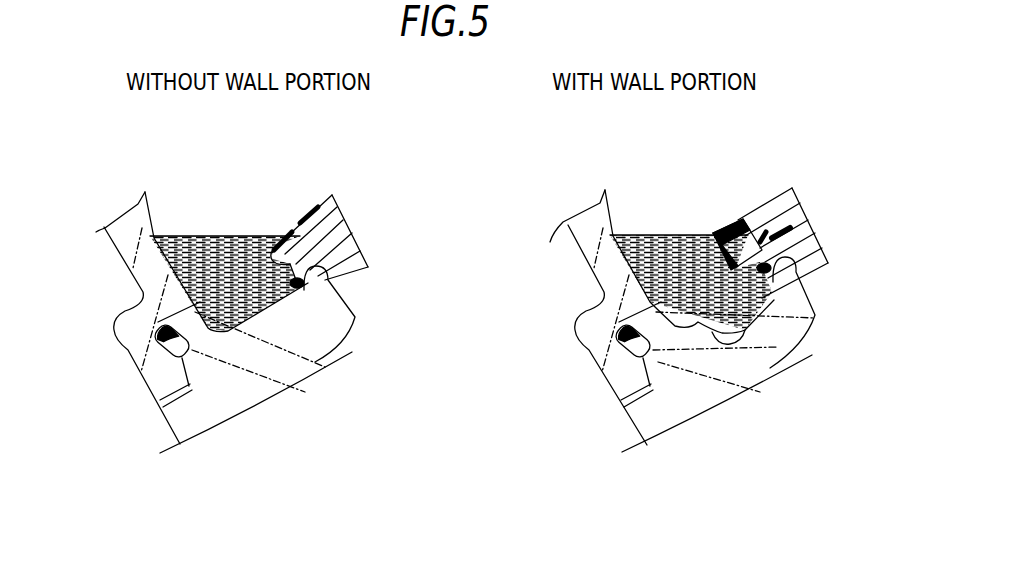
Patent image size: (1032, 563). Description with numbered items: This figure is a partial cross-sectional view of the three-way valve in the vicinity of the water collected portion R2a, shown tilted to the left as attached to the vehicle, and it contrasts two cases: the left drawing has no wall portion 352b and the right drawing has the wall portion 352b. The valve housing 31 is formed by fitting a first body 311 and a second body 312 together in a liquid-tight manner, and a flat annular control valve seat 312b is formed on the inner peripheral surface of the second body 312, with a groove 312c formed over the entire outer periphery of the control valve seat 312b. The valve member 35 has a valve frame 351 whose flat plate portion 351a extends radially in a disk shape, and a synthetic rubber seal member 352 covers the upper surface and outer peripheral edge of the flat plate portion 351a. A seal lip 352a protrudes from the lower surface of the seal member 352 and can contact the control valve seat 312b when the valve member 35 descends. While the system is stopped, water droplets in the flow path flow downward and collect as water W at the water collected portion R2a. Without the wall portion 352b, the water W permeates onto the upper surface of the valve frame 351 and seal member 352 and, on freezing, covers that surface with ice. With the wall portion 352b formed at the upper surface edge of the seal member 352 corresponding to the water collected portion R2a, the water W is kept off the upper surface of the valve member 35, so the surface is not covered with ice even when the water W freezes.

The valve housing 31 is at (64, 378).
The first body 311 is at (140, 352).
The second body 312 is at (178, 415).
The control valve seat 312b is at (355, 312).
The groove 312c is at (722, 336).
The valve member 35 is at (323, 200).
The valve frame 351 is at (334, 226).
The flat plate portion 351a is at (790, 216).
The seal member 352 is at (297, 228).
The seal lip 352a is at (305, 290).
The wall portion 352b is at (728, 226).
The water W is at (197, 247).
The water collected portion R2a is at (227, 345).